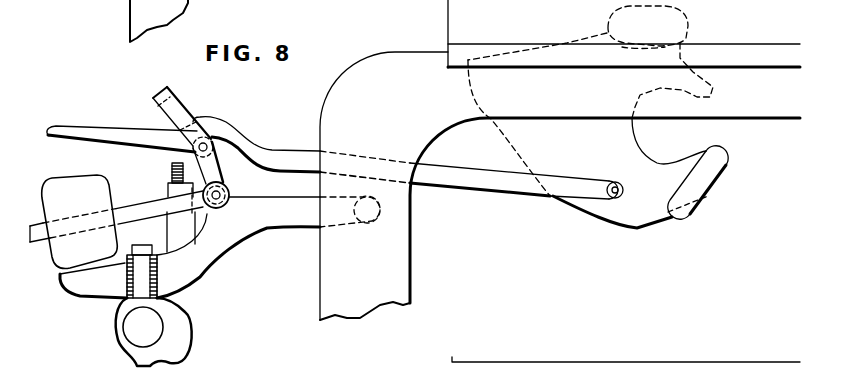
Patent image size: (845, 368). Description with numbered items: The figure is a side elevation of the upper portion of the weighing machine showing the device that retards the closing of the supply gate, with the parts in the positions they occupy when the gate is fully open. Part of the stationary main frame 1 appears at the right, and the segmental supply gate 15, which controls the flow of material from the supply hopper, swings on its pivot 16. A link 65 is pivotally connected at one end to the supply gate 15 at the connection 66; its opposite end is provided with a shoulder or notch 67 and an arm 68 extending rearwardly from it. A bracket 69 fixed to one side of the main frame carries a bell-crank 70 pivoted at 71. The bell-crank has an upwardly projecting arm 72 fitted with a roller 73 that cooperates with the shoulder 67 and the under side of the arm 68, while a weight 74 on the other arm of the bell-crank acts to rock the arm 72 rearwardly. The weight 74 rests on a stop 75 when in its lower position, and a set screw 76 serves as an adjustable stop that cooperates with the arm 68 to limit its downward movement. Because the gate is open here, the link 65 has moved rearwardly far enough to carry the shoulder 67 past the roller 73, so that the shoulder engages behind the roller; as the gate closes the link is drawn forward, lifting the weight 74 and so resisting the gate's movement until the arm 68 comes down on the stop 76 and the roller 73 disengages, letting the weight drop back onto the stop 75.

The stationary main frame 1 is at (370, 62).
The supply gate 15 is at (628, 221).
The pivot 16 is at (685, 18).
The link 65 is at (485, 179).
The pivotal connection 66 is at (624, 191).
The shoulder or notch 67 is at (208, 117).
The arm 68 is at (99, 130).
The bracket 69 is at (188, 272).
The bell-crank 70 is at (147, 193).
The pivot 71 is at (229, 190).
The upwardly projecting arm 72 is at (175, 108).
The roller 73 is at (217, 146).
The weight 74 is at (62, 178).
The stop 75 is at (78, 288).
The set screw 76 is at (172, 165).